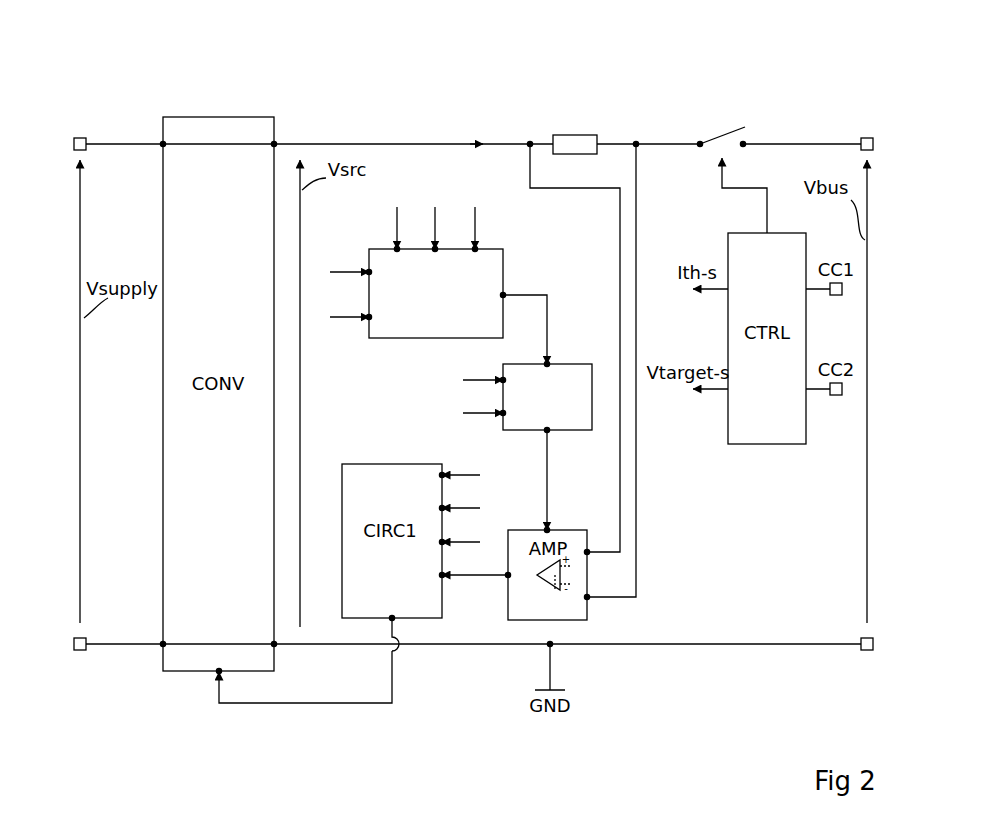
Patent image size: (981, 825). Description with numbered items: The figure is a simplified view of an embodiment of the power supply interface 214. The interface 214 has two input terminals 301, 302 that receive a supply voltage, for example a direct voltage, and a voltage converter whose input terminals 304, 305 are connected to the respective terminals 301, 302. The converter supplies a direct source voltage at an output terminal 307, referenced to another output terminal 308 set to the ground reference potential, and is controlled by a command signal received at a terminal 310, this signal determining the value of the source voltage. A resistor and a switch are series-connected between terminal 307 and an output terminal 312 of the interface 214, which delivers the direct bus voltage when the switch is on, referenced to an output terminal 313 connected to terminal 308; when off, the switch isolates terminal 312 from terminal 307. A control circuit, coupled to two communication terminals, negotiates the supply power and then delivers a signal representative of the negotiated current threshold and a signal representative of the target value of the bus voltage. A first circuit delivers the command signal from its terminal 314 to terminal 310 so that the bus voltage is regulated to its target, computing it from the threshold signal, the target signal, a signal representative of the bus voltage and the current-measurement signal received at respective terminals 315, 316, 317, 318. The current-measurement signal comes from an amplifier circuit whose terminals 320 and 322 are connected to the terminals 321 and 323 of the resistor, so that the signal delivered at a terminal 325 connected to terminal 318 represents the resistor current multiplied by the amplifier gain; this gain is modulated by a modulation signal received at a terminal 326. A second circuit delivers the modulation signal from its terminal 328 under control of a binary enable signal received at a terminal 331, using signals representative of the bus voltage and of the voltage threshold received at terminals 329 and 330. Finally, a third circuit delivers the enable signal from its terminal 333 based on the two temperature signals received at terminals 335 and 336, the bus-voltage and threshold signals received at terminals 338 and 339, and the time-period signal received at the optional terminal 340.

The power supply interface 214 is at (428, 103).
The input terminal 301 is at (79, 138).
The input terminal 302 is at (81, 651).
The input terminal of converter CONV 304 is at (160, 141).
The input terminal of converter CONV 305 is at (160, 643).
The output terminal of converter CONV 307 is at (277, 141).
The output terminal of converter CONV 308 is at (272, 643).
The terminal of converter CONV 310 is at (218, 675).
The output terminal of interface 312 is at (866, 138).
The output terminal of interface 313 is at (866, 652).
The terminal of circuit CIRC1 314 is at (394, 620).
The terminal of circuit CIRC1 315 is at (440, 475).
The terminal of circuit CIRC1 316 is at (440, 508).
The terminal of circuit CIRC1 317 is at (440, 543).
The terminal of circuit CIRC1 318 is at (440, 576).
The terminal of circuit AMP 320 is at (589, 552).
The terminal of resistor R 321 is at (530, 140).
The terminal of circuit AMP 322 is at (589, 600).
The terminal of resistor R 323 is at (636, 140).
The terminal of circuit AMP 325 is at (507, 578).
The terminal of circuit AMP 326 is at (549, 528).
The terminal of circuit CIRC2 328 is at (549, 432).
The terminal of circuit CIRC2 329 is at (505, 413).
The terminal of circuit CIRC2 330 is at (505, 380).
The terminal of circuit CIRC2 331 is at (549, 362).
The terminal of circuit CIRC3 333 is at (506, 293).
The terminal of circuit CIRC3 335 is at (372, 317).
The terminal of circuit CIRC3 336 is at (372, 272).
The terminal of circuit CIRC3 338 is at (477, 247).
The terminal of circuit CIRC3 339 is at (437, 247).
The terminal of circuit CIRC3 340 is at (394, 247).